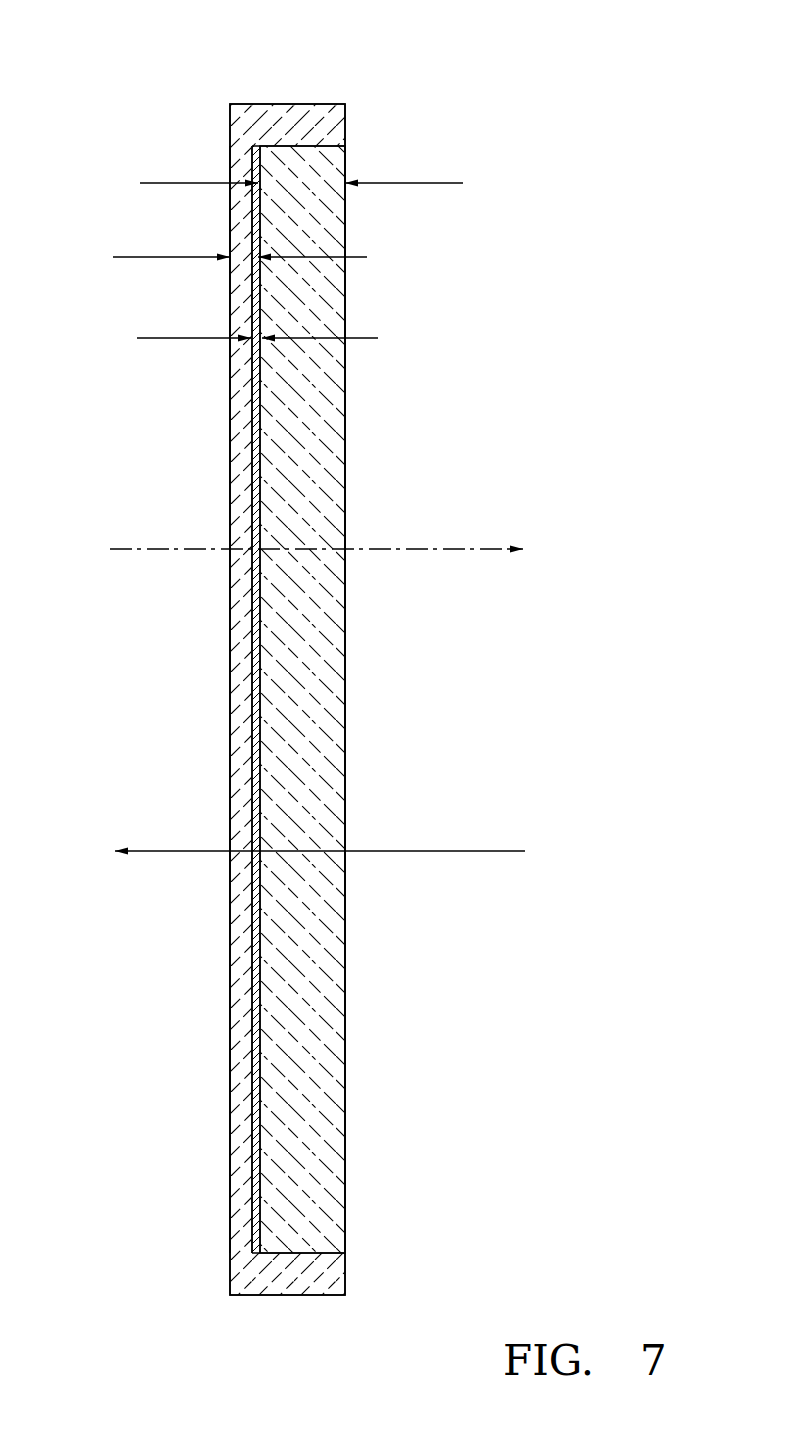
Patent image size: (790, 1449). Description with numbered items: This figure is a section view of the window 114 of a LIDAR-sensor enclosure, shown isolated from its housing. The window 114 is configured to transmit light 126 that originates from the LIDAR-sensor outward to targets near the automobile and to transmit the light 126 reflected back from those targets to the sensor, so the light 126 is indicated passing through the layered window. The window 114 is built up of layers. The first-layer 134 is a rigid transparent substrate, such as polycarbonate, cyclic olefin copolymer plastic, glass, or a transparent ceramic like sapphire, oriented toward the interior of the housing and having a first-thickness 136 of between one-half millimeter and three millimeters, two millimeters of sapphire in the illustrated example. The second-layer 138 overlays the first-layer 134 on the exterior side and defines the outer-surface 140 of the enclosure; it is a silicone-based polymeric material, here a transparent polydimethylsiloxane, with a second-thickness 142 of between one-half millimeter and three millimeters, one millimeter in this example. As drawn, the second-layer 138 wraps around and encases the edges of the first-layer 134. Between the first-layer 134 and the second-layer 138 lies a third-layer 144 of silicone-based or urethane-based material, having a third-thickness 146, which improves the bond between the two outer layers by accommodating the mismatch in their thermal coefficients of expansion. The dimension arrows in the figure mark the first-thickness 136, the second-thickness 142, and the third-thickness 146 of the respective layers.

The window 114 is at (163, 72).
The light 126 is at (100, 541).
The first-layer 134 is at (338, 1153).
The first-thickness 136 is at (440, 183).
The second-layer 138 is at (235, 1138).
The outer-surface 140 is at (210, 940).
The second-thickness 142 is at (363, 257).
The third-layer 144 is at (252, 1253).
The third-thickness 146 is at (367, 338).